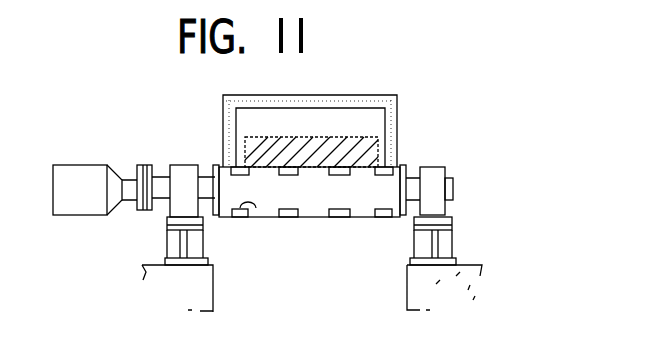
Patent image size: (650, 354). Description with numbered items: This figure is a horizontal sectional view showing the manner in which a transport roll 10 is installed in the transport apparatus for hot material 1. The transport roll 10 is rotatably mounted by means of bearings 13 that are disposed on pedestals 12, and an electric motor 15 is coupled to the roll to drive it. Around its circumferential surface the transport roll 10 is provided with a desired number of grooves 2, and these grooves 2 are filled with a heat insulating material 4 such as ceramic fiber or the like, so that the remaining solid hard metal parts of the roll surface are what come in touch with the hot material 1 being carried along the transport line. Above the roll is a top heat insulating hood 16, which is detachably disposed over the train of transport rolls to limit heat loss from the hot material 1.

The hot material 1 is at (365, 138).
The grooves 2 is at (256, 212).
The heat insulating material 4 is at (381, 217).
The transport roll 10 is at (312, 217).
The pedestal 12 is at (455, 237).
The bearing 13 is at (435, 167).
The electric motor 15 is at (88, 165).
The top heat insulating hood 16 is at (368, 95).